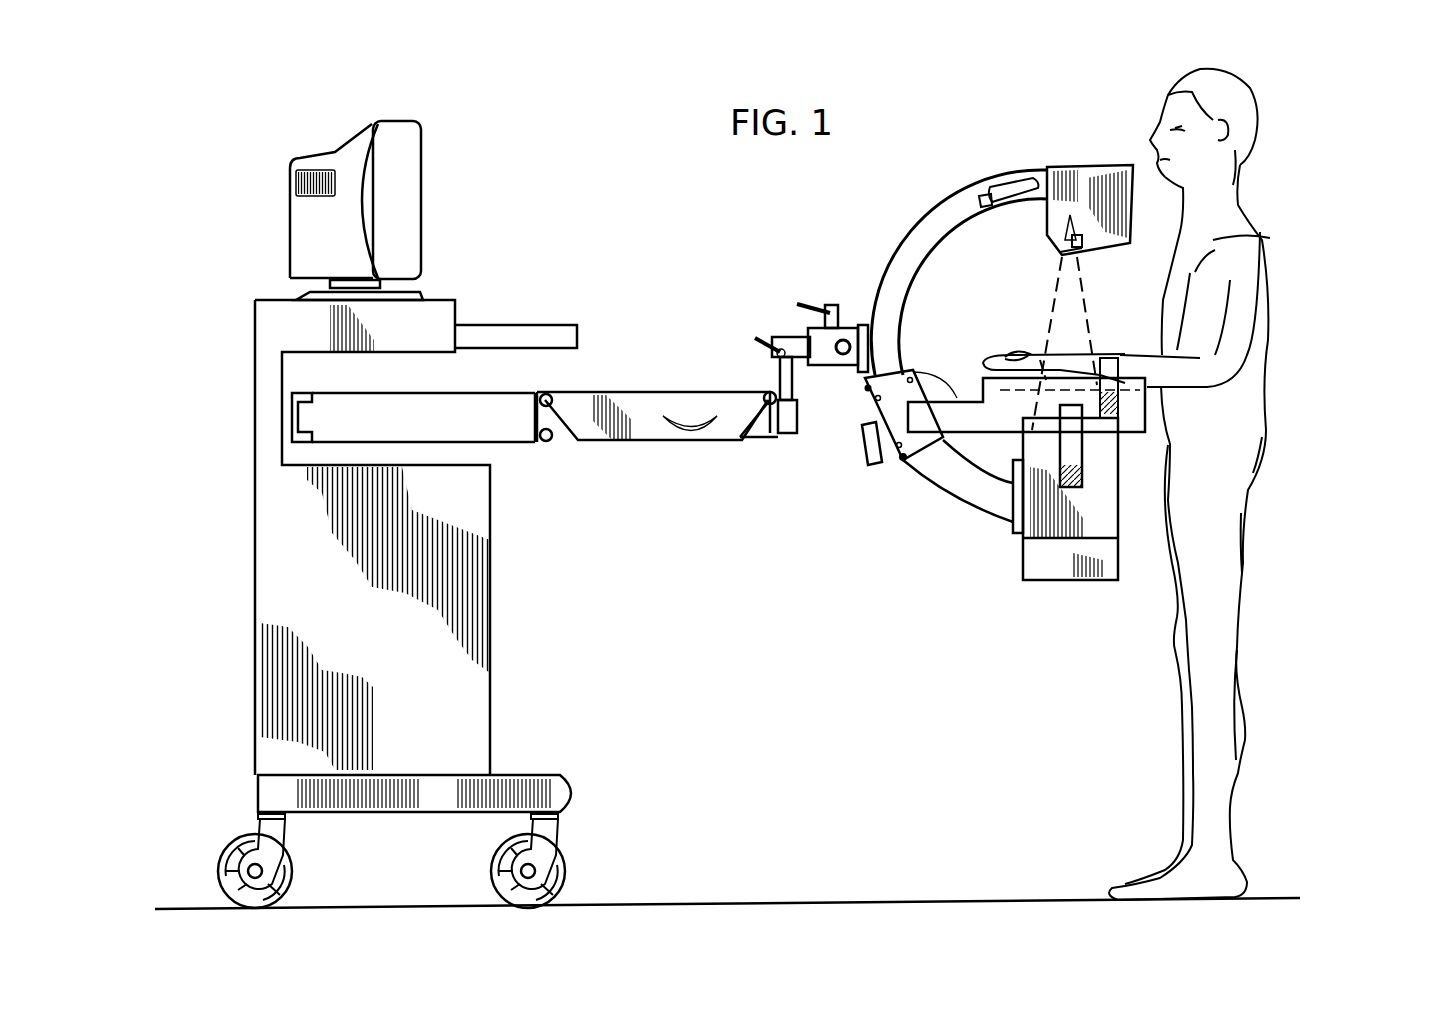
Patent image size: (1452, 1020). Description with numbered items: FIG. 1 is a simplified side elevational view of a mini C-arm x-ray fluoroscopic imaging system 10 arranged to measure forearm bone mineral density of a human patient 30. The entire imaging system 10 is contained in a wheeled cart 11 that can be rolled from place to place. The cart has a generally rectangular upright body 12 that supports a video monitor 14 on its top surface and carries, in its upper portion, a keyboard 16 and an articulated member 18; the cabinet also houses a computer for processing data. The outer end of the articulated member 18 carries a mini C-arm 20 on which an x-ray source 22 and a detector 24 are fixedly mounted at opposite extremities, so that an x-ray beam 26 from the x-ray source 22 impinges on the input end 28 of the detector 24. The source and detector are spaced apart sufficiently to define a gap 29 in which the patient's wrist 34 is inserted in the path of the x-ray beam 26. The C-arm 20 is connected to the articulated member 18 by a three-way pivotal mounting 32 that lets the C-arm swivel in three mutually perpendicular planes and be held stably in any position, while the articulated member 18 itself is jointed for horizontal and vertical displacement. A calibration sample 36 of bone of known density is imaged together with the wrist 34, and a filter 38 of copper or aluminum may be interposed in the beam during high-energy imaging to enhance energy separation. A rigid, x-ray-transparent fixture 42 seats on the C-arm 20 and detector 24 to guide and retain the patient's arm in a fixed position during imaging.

The imaging system 10 is at (609, 231).
The wheeled cart 11 is at (510, 775).
The upright body 12 is at (383, 647).
The video monitor 14 is at (376, 130).
The keyboard 16 is at (522, 327).
The articulated member 18 is at (553, 442).
The mini C-arm 20 is at (906, 267).
The x-ray source 22 is at (1068, 167).
The detector 24 is at (1108, 528).
The x-ray beam 26 is at (1060, 275).
The input end of the detector 28 is at (1123, 406).
The gap 29 is at (1057, 302).
The human patient 30 is at (1185, 622).
The 3-way pivotal mounting 32 is at (790, 333).
The wrist 34 is at (1062, 364).
The calibration sample 36 is at (1117, 360).
The filter 38 is at (1092, 251).
The fixture 42 is at (1015, 435).